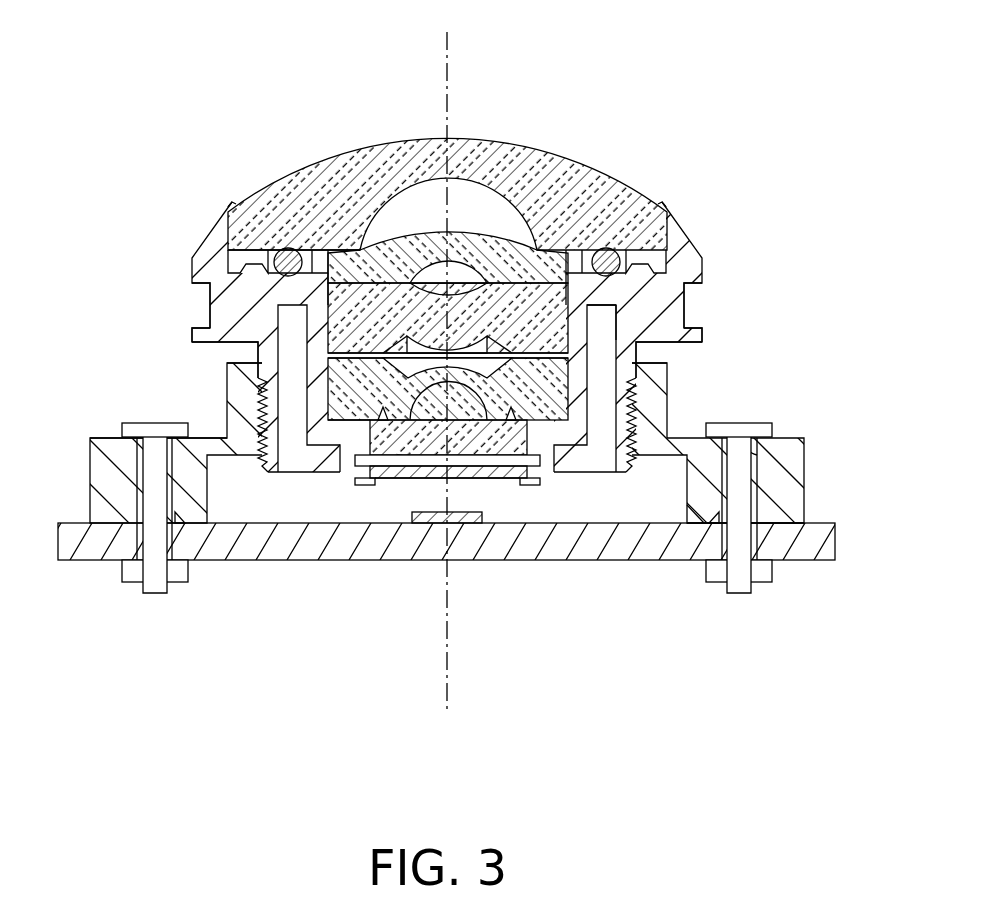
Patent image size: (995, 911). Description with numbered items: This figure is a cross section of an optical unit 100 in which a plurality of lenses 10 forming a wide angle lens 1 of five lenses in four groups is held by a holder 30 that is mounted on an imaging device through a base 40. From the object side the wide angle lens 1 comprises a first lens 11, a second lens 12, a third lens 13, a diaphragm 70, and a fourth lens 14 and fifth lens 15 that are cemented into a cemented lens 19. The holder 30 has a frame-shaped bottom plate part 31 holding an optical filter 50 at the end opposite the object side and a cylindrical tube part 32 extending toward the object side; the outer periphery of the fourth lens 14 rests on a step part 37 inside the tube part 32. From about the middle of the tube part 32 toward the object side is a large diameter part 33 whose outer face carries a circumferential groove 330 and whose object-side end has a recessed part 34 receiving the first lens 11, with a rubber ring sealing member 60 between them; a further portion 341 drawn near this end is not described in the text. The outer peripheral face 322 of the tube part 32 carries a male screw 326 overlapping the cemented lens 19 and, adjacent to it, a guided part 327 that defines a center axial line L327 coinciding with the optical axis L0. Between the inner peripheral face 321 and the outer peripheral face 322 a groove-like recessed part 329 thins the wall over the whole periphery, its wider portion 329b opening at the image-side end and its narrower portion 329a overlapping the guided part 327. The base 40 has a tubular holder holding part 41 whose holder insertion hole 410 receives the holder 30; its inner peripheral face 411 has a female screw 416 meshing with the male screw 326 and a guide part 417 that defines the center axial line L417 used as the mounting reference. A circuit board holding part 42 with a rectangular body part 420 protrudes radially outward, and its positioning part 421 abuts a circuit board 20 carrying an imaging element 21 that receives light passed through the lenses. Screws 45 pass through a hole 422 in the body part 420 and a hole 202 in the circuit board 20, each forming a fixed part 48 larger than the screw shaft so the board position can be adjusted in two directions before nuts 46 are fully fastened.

The optical unit 100 is at (233, 158).
The wide angle lens 1 is at (515, 282).
The plurality of lenses 10 is at (618, 172).
The first lens 11 is at (483, 182).
The second lens 12 is at (543, 243).
The third lens 13 is at (533, 307).
The fourth lens 14 is at (557, 390).
The fifth lens 15 is at (562, 418).
The cemented lens 19 is at (565, 391).
The diaphragm 70 is at (505, 357).
The recessed part 34 is at (296, 250).
The sealing member 60 is at (292, 256).
The holder 30 is at (708, 238).
The bottom plate part 31 is at (538, 480).
The tube part 32 is at (258, 355).
The large diameter part 33 is at (200, 338).
The step part 37 is at (350, 425).
The inner peripheral face 321 is at (608, 362).
The outer peripheral face 322 is at (368, 425).
The male screw 326 is at (394, 541).
The guided part 327 is at (230, 366).
The recessed part 329 is at (431, 515).
The portion of recessed part 329a is at (293, 425).
The portion of recessed part 329b is at (325, 460).
The circumferential groove 330 is at (200, 300).
The tip portion 341 is at (230, 203).
The base 40 is at (810, 440).
The holder holding part 41 is at (230, 405).
The circuit board holding part 42 is at (793, 493).
The screws 45 is at (743, 473).
The nuts 46 is at (770, 578).
The fixed part 48 is at (484, 469).
The holder insertion hole 410 is at (266, 382).
The inner peripheral face 411 is at (262, 397).
The female screw 416 is at (285, 435).
The guide part 417 is at (353, 369).
The body part 420 is at (783, 518).
The positioning part 421 is at (690, 558).
The hole 422 is at (758, 463).
The circuit board 20 is at (377, 557).
The imaging element 21 is at (417, 525).
The hole 202 is at (722, 537).
The optical filter 50 is at (482, 480).
The optical axis L0 is at (552, 368).
The center axial line L327 is at (552, 368).
The center axial line L417 is at (448, 57).